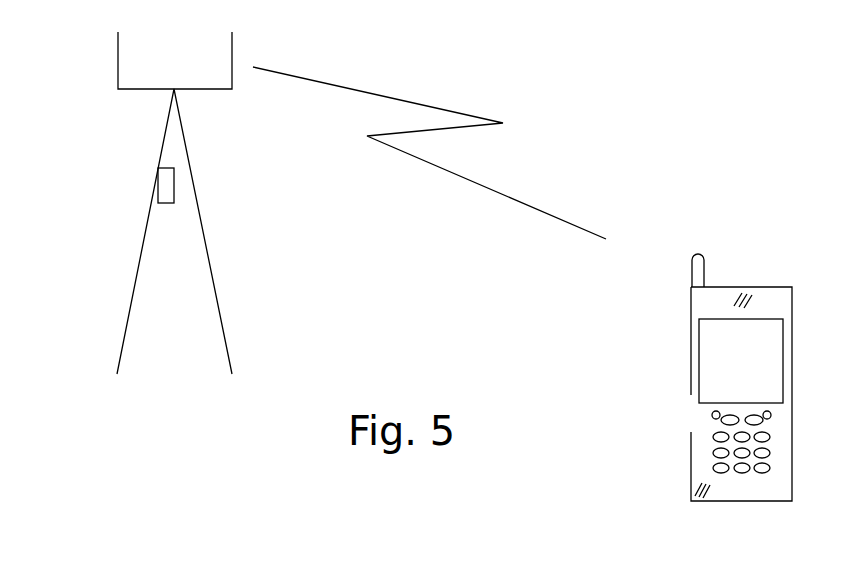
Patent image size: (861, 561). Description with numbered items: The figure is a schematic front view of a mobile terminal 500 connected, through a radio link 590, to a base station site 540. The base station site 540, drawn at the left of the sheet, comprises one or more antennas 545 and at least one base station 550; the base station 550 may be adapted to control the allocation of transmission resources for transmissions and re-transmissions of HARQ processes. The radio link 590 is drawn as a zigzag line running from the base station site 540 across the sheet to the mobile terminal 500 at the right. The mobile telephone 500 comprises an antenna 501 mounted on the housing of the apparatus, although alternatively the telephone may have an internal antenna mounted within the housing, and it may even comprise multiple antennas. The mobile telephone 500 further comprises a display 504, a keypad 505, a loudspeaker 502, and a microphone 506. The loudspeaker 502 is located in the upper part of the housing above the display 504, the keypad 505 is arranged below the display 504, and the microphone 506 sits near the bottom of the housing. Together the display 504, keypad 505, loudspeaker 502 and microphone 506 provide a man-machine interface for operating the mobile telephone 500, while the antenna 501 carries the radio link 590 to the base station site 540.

The mobile terminal 500 is at (740, 237).
The antenna 501 is at (688, 277).
The loudspeaker 502 is at (748, 290).
The display 504 is at (700, 367).
The keypad 505 is at (713, 438).
The microphone 506 is at (695, 487).
The base station site 540 is at (142, 269).
The antenna 545 is at (118, 65).
The base station 550 is at (163, 180).
The radio link 590 is at (435, 165).